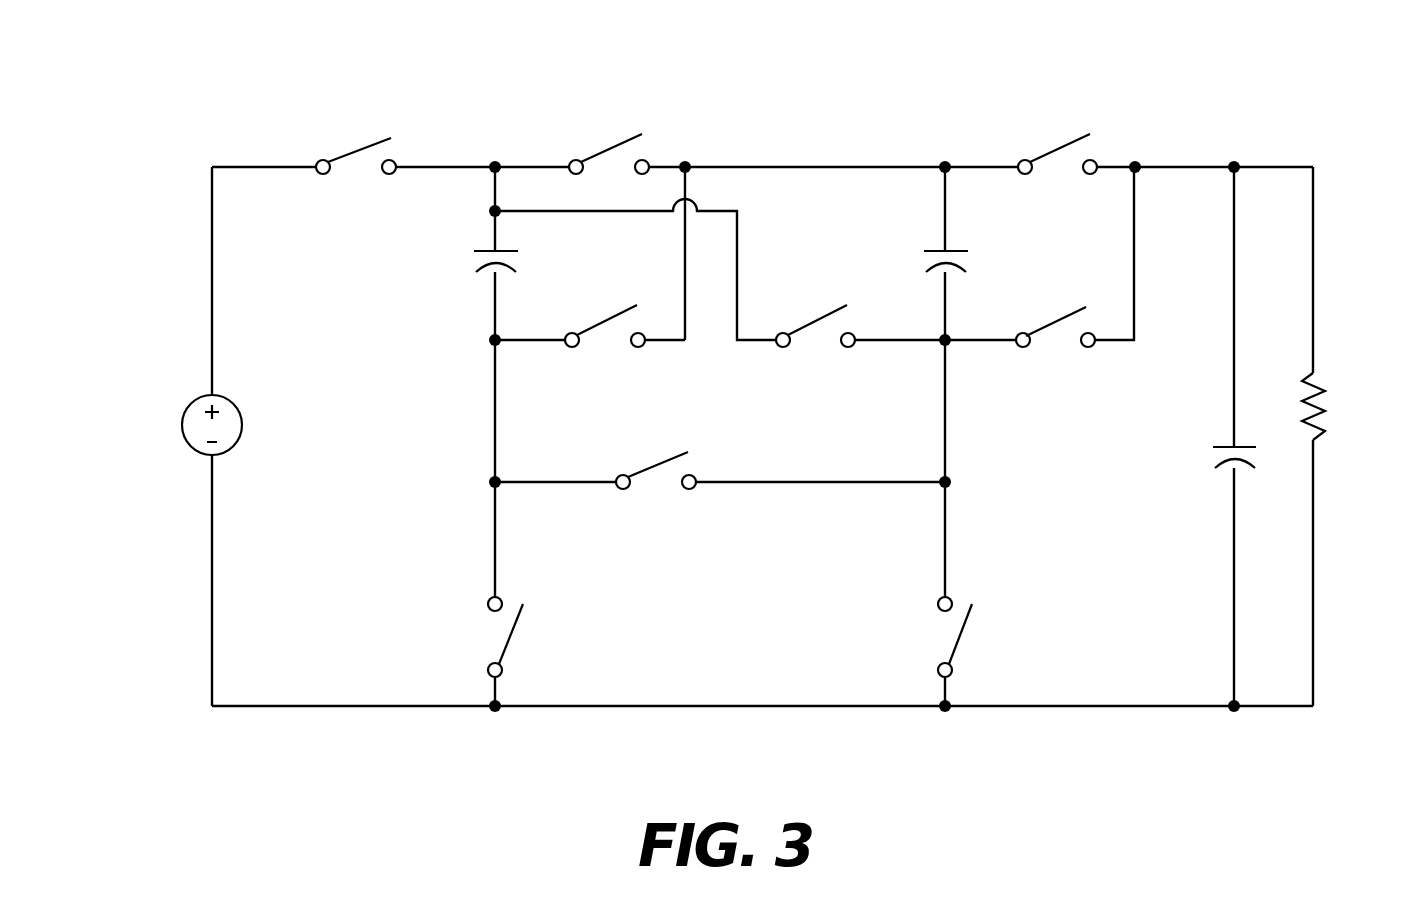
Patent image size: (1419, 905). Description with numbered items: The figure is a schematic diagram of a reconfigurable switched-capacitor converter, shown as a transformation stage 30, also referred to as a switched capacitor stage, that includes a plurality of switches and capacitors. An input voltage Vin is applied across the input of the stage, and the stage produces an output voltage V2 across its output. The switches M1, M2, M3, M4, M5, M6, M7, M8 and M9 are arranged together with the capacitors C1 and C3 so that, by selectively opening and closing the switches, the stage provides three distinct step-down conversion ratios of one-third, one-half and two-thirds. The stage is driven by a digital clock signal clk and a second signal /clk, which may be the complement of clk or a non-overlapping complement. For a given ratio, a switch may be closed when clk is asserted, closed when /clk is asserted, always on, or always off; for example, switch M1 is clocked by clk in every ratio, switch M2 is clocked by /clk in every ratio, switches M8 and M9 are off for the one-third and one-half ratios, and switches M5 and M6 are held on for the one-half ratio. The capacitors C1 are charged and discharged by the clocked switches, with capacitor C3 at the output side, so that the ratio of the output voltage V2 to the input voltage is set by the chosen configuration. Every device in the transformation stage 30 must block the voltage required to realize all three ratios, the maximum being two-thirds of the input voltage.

The transformation stage 30 is at (1052, 74).
The switch M1 is at (356, 136).
The switch M2 is at (480, 637).
The switch M3 is at (609, 136).
The switch M4 is at (605, 345).
The switch M5 is at (929, 637).
The switch M6 is at (1057, 136).
The switch M7 is at (1055, 347).
The switch M8 is at (656, 490).
The switch M9 is at (815, 345).
The capacitor C1 is at (700, 259).
The capacitor C3 is at (1214, 456).
The input voltage Vin is at (190, 425).
The output voltage V2 is at (1343, 410).